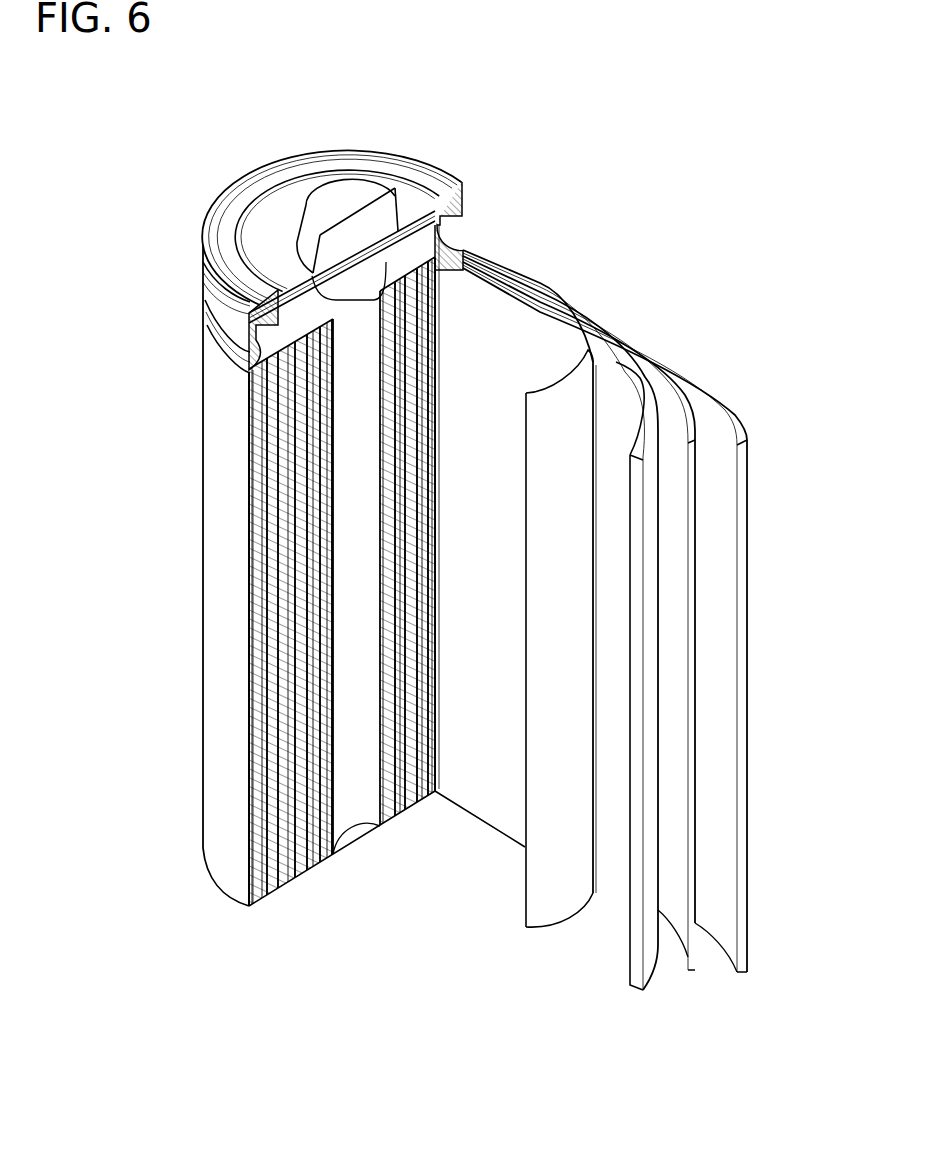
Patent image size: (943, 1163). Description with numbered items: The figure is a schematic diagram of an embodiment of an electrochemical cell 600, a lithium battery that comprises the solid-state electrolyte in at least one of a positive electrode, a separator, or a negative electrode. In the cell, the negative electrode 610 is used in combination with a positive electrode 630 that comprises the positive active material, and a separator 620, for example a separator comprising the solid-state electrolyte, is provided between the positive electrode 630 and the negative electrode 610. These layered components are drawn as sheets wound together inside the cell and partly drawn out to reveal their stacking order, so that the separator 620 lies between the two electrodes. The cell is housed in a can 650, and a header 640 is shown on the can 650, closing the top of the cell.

The electrochemical cell 600 is at (647, 177).
The negative electrode 610 is at (732, 422).
The separator 620 is at (533, 317).
The positive electrode 630 is at (615, 372).
The header 640 is at (330, 193).
The can 650 is at (215, 572).